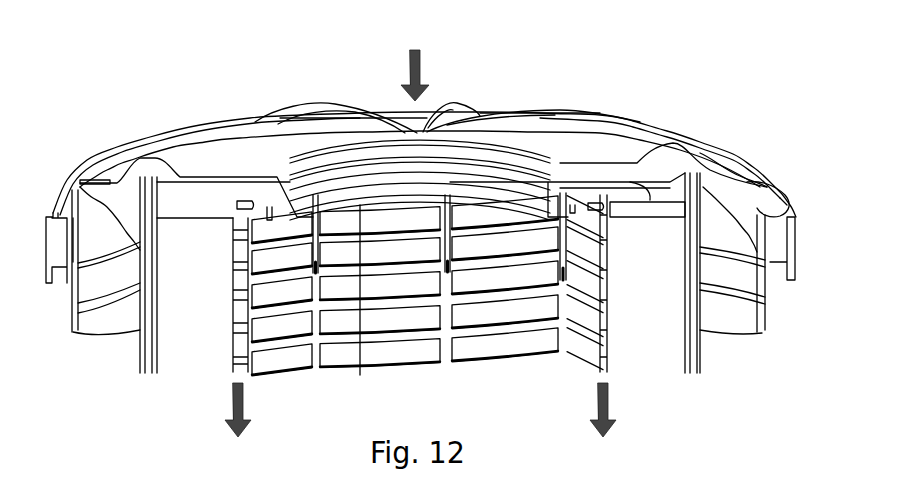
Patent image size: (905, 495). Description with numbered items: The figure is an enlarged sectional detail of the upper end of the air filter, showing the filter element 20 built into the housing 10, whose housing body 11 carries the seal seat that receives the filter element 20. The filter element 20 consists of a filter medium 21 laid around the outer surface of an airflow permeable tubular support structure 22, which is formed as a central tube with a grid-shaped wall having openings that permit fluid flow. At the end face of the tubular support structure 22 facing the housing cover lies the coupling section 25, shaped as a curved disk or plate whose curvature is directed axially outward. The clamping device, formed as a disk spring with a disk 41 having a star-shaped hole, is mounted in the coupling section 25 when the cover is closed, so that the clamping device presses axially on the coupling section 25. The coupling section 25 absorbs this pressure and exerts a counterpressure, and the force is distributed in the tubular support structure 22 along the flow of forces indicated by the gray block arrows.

The housing 10 is at (123, 97).
The housing body 11 is at (140, 325).
The filter element 20 is at (468, 384).
The filter medium 21 is at (180, 365).
The tubular support structure 22 is at (232, 335).
The coupling section 25 is at (340, 103).
The disk 41 is at (462, 118).